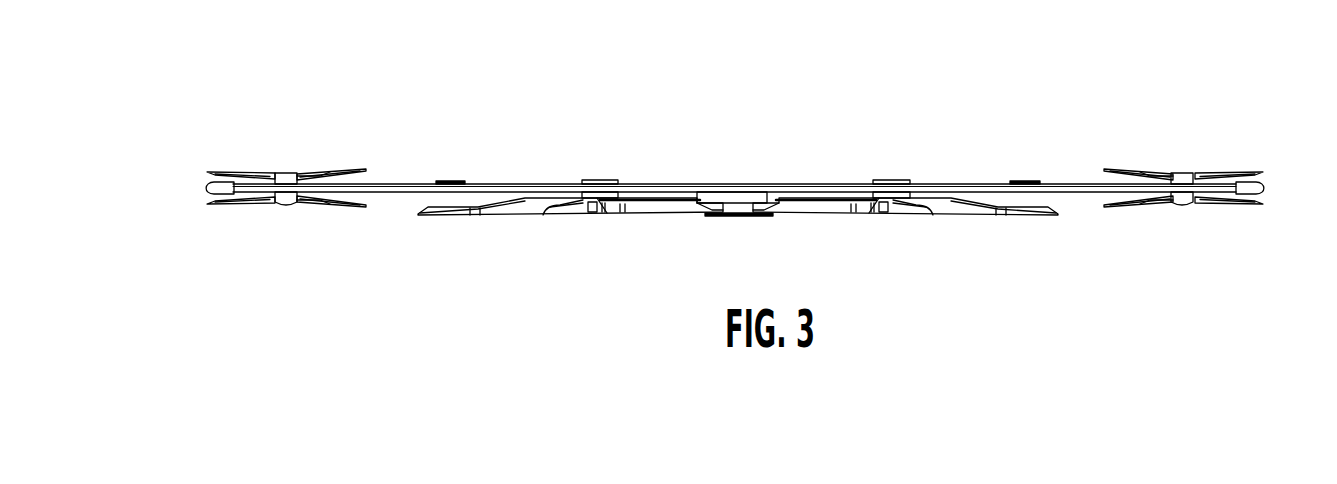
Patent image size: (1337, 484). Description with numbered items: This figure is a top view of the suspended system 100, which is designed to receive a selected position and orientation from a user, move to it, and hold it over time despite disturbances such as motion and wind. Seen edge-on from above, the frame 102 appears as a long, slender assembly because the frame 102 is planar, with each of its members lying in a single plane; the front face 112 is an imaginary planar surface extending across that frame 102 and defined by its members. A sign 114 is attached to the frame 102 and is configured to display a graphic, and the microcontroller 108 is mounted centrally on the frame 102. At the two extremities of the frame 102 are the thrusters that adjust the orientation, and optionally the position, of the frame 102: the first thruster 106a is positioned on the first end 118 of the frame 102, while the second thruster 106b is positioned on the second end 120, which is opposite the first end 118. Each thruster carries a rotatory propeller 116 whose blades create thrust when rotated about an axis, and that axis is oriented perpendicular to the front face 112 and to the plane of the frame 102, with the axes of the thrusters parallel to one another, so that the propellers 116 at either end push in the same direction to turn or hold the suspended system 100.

The suspended system 100 is at (568, 57).
The frame 102 is at (494, 184).
The first thruster 106a is at (291, 171).
The second thruster 106b is at (1181, 172).
The microcontroller 108 is at (732, 199).
The front face 112 is at (897, 215).
The sign 114 is at (650, 210).
The rotatory propeller 116 is at (320, 174).
The first end 118 is at (203, 187).
The second end 120 is at (1263, 188).